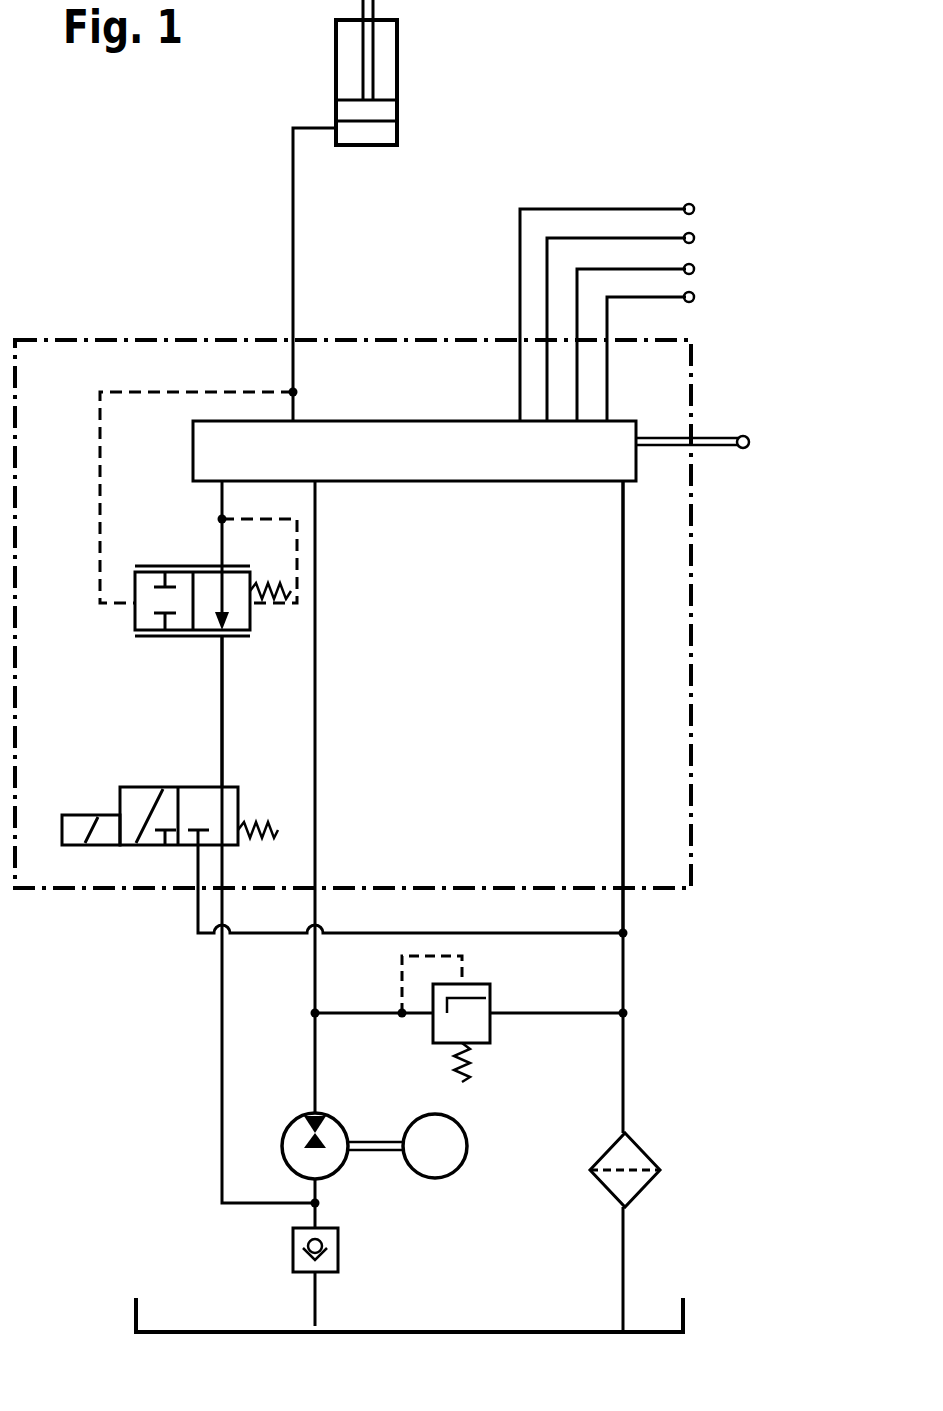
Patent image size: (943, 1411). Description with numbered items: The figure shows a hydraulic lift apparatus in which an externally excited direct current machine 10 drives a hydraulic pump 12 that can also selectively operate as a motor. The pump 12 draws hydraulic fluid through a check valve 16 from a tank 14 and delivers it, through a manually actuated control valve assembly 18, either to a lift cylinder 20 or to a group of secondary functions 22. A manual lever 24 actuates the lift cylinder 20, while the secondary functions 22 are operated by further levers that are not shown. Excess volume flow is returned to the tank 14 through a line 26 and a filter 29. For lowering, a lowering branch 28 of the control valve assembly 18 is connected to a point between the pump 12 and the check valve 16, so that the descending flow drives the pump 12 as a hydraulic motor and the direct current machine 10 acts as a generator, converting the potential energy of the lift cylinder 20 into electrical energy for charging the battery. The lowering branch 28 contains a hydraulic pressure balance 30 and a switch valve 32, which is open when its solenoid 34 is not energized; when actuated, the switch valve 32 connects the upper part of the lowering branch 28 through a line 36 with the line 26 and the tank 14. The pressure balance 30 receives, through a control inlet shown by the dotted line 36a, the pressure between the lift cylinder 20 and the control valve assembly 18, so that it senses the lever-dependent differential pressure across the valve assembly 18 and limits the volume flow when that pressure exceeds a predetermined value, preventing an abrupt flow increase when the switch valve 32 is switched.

The externally excited direct current machine 10 is at (468, 1130).
The hydraulic pump 12 is at (293, 1122).
The tank 14 is at (130, 1318).
The check valve 16 is at (340, 1245).
The control valve assembly 18 is at (428, 468).
The lift cylinder 20 is at (397, 86).
The group of secondary functions 22 is at (700, 197).
The manual lever 24 is at (731, 437).
The line 26 is at (620, 650).
The lowering branch 28 is at (220, 705).
The filter 29 is at (645, 1185).
The hydraulic pressure balance 30 is at (161, 560).
The switch valve 32 is at (133, 778).
The solenoid 34 is at (98, 848).
The line 36 is at (505, 932).
The dotted line 36a is at (135, 391).